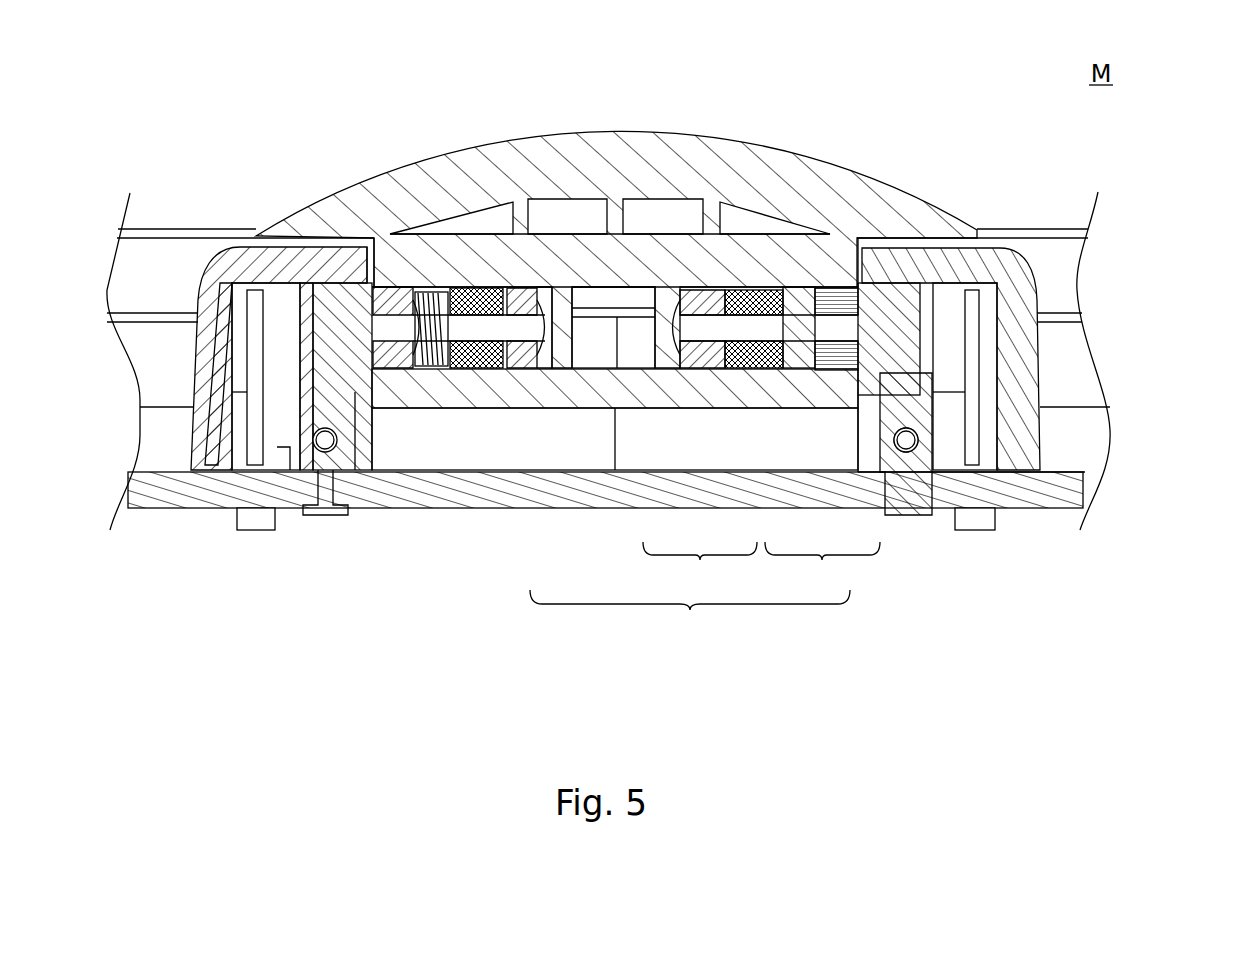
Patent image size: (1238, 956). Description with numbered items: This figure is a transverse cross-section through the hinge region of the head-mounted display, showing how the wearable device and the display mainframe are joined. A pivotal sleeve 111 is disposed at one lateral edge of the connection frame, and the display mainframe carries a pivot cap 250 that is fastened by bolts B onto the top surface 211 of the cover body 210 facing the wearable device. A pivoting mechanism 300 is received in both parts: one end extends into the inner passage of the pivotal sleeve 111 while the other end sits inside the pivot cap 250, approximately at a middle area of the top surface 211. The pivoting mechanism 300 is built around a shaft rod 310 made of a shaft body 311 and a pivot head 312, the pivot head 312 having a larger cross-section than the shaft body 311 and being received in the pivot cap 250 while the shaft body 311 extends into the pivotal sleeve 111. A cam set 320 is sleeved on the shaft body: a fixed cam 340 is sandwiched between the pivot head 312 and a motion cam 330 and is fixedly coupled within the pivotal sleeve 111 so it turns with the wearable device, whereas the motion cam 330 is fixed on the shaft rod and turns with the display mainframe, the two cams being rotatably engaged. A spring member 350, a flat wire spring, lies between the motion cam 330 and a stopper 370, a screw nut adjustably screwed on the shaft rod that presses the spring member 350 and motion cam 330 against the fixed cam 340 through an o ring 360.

The pivotal sleeve 111 is at (641, 258).
The o ring 360 is at (742, 300).
The pivot cap 250 is at (1020, 285).
The top surface 211 is at (1085, 472).
The cover body 210 is at (1085, 503).
The pivoting mechanism 300 is at (646, 369).
The stopper 370 is at (700, 330).
The spring member 350 is at (738, 345).
The cam set 320 is at (750, 442).
The motion cam 330 is at (762, 355).
The fixed cam 340 is at (800, 350).
The shaft rod 310 is at (842, 438).
The shaft body 311 is at (838, 350).
The pivot head 312 is at (845, 360).
The bolt B is at (906, 452).